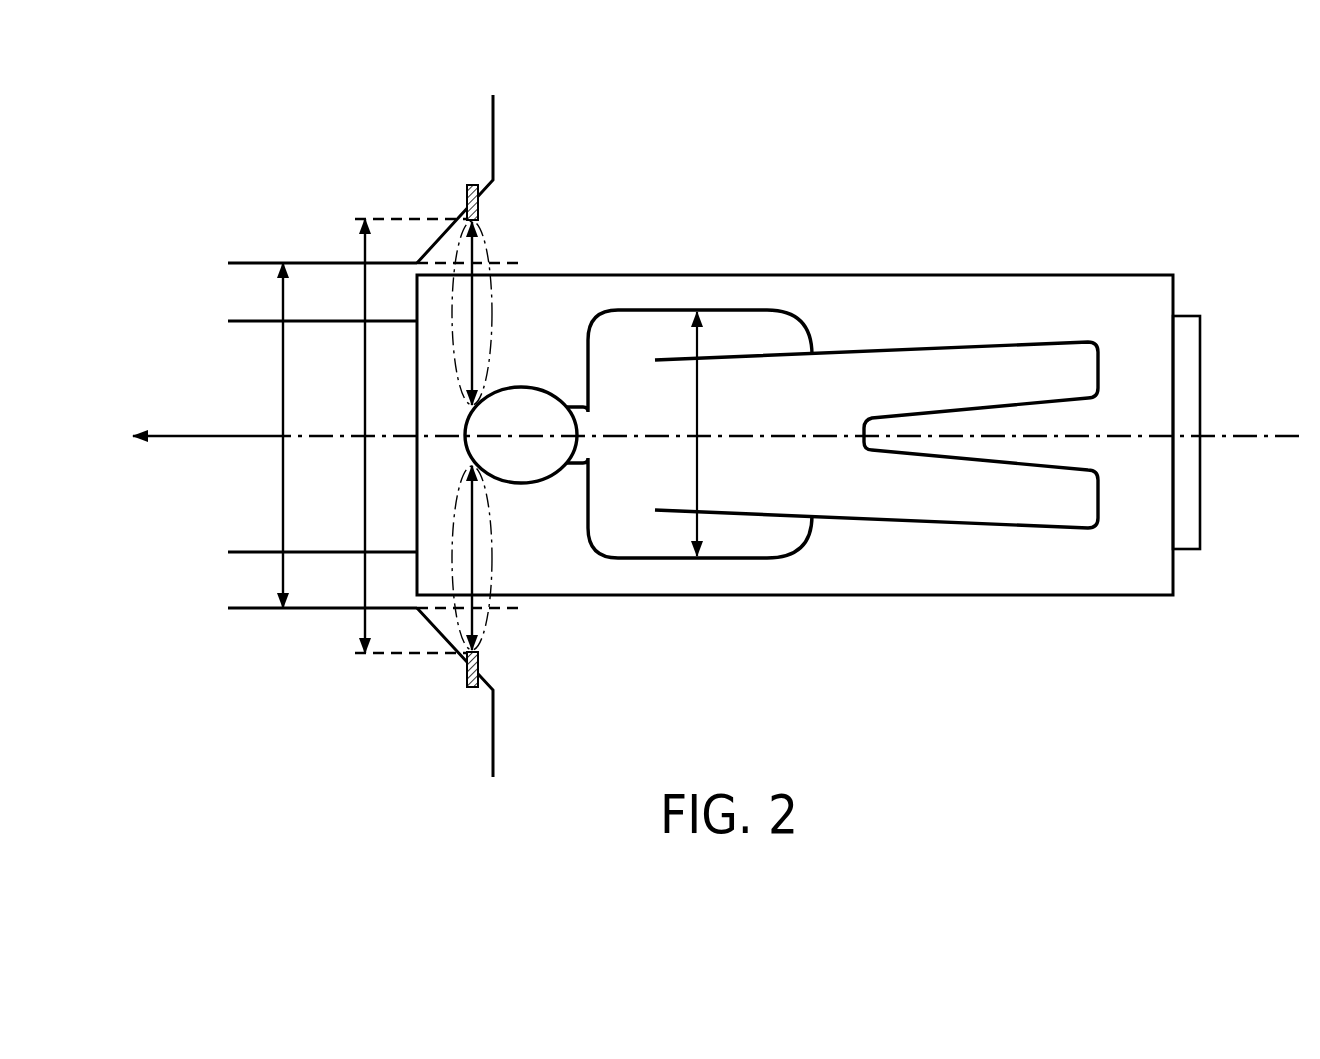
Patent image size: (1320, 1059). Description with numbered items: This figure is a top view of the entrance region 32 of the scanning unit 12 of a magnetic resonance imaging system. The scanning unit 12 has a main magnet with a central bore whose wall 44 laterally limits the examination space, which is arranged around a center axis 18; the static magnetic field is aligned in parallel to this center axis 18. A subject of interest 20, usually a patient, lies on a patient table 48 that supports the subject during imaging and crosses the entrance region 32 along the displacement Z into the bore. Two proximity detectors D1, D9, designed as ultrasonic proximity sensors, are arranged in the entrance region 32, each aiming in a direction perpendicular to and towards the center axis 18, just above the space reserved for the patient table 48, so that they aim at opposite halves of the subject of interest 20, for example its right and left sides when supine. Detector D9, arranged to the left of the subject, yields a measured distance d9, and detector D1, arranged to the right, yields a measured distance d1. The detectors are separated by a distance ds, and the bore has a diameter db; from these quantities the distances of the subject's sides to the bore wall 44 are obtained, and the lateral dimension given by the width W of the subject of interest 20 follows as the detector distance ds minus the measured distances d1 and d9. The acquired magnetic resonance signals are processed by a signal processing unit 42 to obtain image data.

The scanning unit 12 is at (305, 685).
The center axis 18 is at (1253, 432).
The subject of interest 20 is at (632, 362).
The entrance region 32 is at (616, 685).
The signal processing unit 42 is at (537, 170).
The wall of the central bore 44 is at (232, 607).
The patient table 48 is at (1127, 305).
The proximity detector D9 is at (467, 192).
The proximity detector D1 is at (467, 680).
The measured distance d9 is at (472, 313).
The measured distance d1 is at (472, 558).
The distance between the two proximity detectors ds is at (365, 410).
The diameter of the bore db is at (282, 410).
The width W is at (698, 422).
The displacement into the bore Z is at (190, 434).